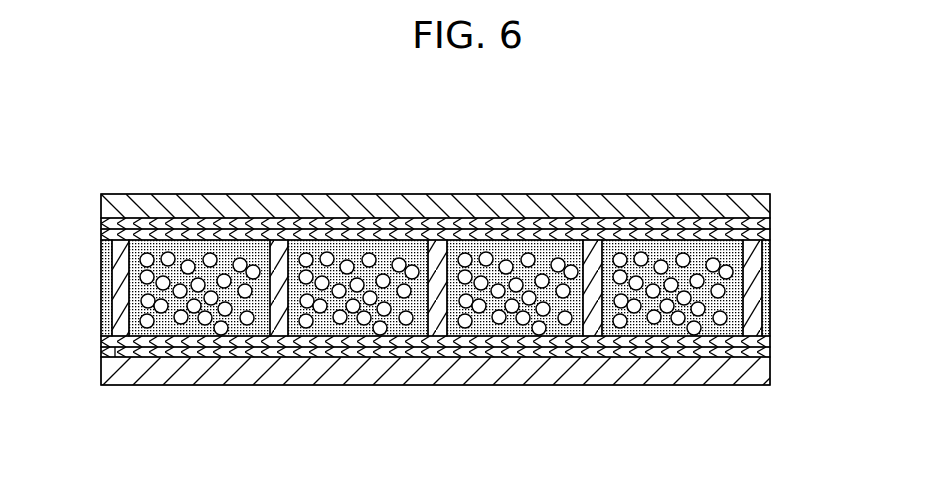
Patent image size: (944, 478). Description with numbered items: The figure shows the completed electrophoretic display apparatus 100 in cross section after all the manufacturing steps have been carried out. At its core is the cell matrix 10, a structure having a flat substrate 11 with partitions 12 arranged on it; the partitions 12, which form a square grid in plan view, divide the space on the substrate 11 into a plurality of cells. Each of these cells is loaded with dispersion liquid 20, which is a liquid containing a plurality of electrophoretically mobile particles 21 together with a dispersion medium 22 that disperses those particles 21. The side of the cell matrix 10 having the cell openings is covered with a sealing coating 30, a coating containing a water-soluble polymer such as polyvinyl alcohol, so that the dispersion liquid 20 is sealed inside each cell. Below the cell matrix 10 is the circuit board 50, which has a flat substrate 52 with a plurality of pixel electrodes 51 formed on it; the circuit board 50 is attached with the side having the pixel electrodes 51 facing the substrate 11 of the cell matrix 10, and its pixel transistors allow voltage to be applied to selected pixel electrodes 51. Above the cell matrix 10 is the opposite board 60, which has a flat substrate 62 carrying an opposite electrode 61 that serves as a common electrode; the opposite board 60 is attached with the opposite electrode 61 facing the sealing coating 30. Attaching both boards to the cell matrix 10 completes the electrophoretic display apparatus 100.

The electrophoretic display apparatus 100 is at (158, 135).
The cell matrix 10 is at (474, 213).
The substrate 11 is at (410, 340).
The partitions 12 is at (436, 252).
The dispersion liquid 20 is at (436, 213).
The electrophoretically mobile particles 21 is at (305, 252).
The dispersion medium 22 is at (343, 250).
The sealing coating 30 is at (518, 234).
The circuit board 50 is at (463, 390).
The pixel electrodes 51 is at (578, 352).
The substrate 52 is at (630, 370).
The opposite board 60 is at (463, 183).
The opposite electrode 61 is at (635, 223).
The substrate 62 is at (680, 200).